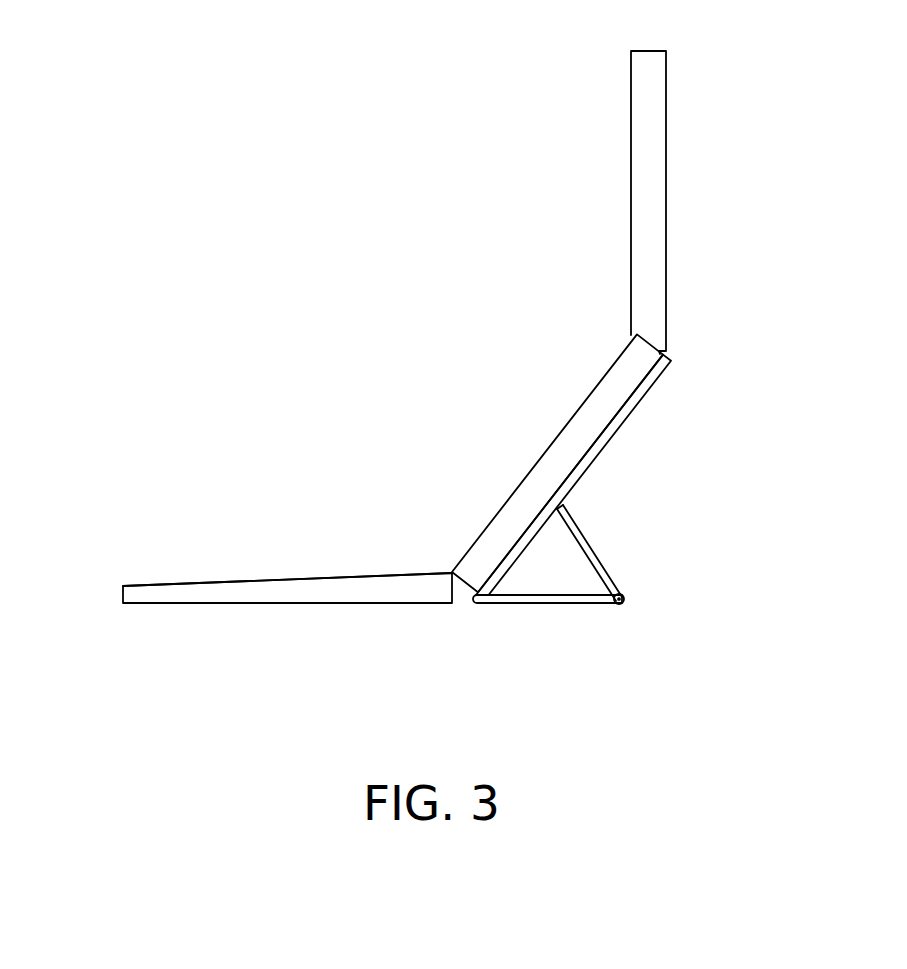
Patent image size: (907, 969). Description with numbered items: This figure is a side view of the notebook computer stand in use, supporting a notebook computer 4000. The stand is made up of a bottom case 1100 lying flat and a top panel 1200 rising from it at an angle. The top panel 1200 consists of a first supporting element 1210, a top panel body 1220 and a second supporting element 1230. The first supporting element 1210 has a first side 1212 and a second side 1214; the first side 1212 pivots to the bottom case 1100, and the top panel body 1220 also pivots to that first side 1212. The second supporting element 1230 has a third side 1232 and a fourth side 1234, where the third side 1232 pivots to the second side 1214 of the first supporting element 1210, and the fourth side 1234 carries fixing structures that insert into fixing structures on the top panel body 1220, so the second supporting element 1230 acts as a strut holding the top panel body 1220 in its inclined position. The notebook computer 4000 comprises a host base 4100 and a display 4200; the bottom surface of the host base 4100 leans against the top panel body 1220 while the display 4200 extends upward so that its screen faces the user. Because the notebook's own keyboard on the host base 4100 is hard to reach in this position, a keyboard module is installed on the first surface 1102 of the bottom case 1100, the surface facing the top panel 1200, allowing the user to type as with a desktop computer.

The bottom case 1100 is at (213, 596).
The first surface 1102 is at (280, 578).
The notebook computer 4000 is at (475, 285).
The host base 4100 is at (597, 407).
The display 4200 is at (639, 288).
The top panel 1200 is at (815, 357).
The top panel body 1220 is at (658, 378).
The second supporting element 1230 is at (743, 467).
The third side 1232 is at (615, 593).
The fourth side 1234 is at (562, 507).
The first supporting element 1210 is at (742, 655).
The first side 1212 is at (483, 605).
The second side 1214 is at (617, 605).